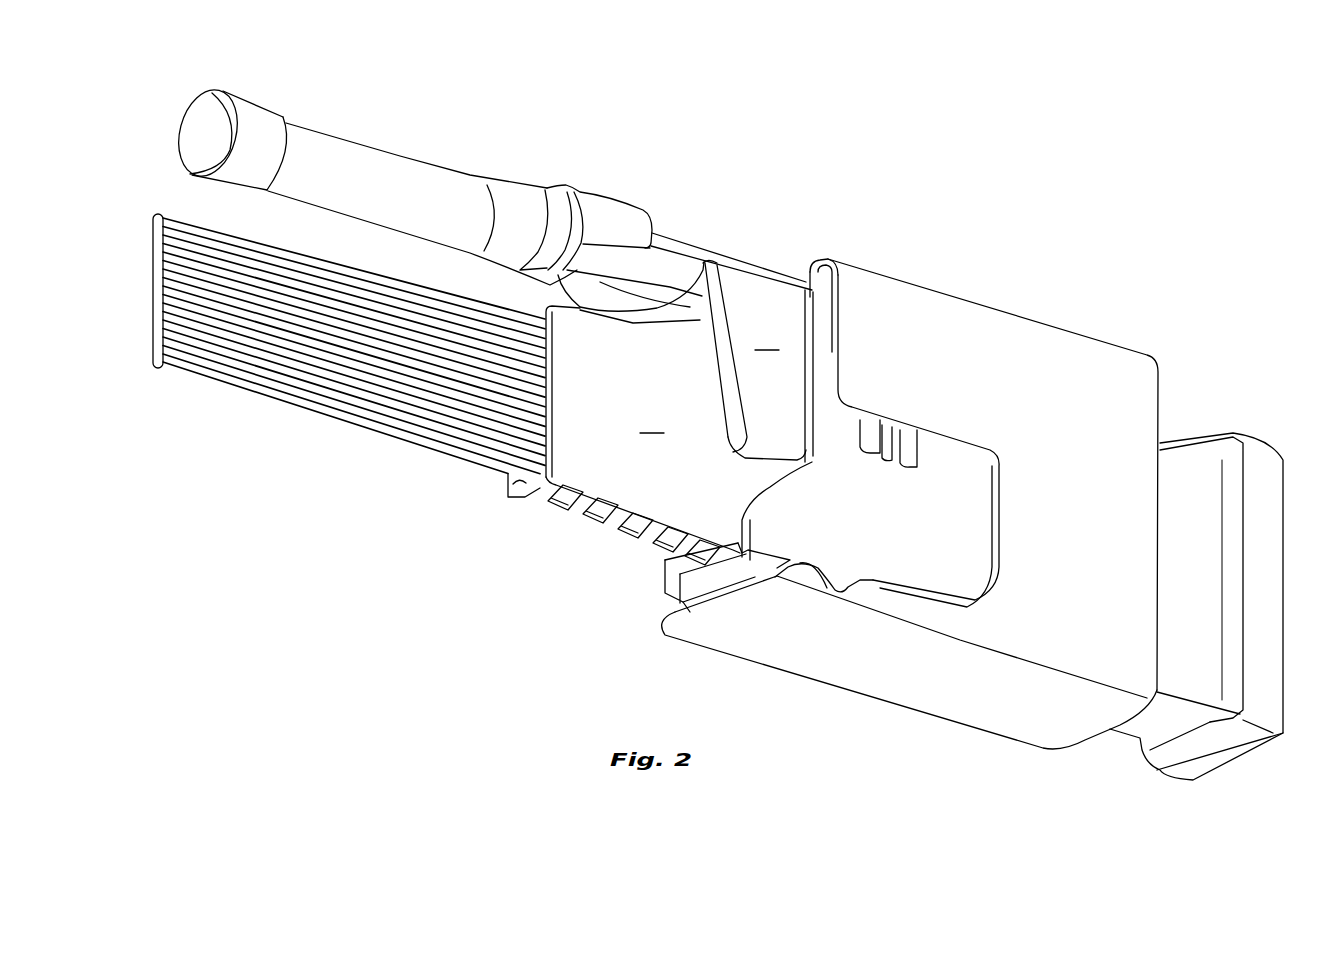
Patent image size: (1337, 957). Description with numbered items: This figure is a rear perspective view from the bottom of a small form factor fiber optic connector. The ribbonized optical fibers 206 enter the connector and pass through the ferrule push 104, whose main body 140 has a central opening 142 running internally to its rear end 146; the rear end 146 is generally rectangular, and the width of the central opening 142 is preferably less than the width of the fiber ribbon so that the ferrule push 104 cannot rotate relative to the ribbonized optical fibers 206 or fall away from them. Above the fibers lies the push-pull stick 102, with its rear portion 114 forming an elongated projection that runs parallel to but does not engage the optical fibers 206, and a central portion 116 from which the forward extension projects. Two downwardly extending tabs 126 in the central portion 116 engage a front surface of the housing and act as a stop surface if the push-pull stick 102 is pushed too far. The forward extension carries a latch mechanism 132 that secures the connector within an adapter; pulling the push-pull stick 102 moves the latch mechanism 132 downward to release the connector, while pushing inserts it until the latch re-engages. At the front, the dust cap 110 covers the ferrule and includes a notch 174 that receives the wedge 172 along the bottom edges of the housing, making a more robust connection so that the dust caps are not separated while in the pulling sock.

The push-pull stick 102 is at (548, 148).
The ferrule push 104 is at (628, 500).
The dust cap 110 is at (1057, 328).
The rear portion 114 is at (435, 127).
The central portion 116 is at (650, 197).
The downwardly extending tabs 126 is at (741, 357).
The latch mechanism 132 is at (595, 300).
The main body 140 is at (643, 429).
The central opening 142 is at (507, 477).
The rear end 146 is at (508, 482).
The wedge 172 is at (837, 584).
The notch 174 is at (820, 595).
The optical fibers 206 is at (320, 417).